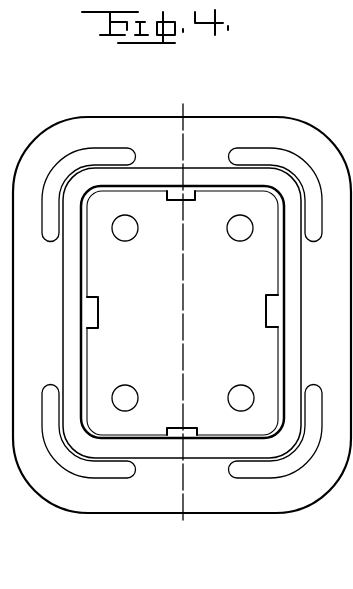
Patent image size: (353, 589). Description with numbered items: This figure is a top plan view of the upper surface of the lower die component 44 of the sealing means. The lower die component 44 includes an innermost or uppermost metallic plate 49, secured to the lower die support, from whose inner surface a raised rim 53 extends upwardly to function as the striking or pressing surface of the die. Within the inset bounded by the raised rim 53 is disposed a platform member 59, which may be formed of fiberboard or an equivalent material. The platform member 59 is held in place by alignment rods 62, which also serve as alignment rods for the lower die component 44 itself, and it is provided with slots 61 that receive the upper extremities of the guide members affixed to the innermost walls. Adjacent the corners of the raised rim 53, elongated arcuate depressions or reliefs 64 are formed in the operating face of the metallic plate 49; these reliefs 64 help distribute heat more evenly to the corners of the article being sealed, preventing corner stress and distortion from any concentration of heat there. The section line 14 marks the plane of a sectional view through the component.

The section line 14- 14 is at (183, 102).
The lower die component 44 is at (306, 83).
The innermost or uppermost metallic plate 49 is at (44, 270).
The raised rim 53 is at (70, 310).
The platform member 59 is at (212, 319).
The slots 61 is at (195, 199).
The alignment rods 62 is at (128, 241).
The elongated arcuate depressions or reliefs 64 is at (98, 149).